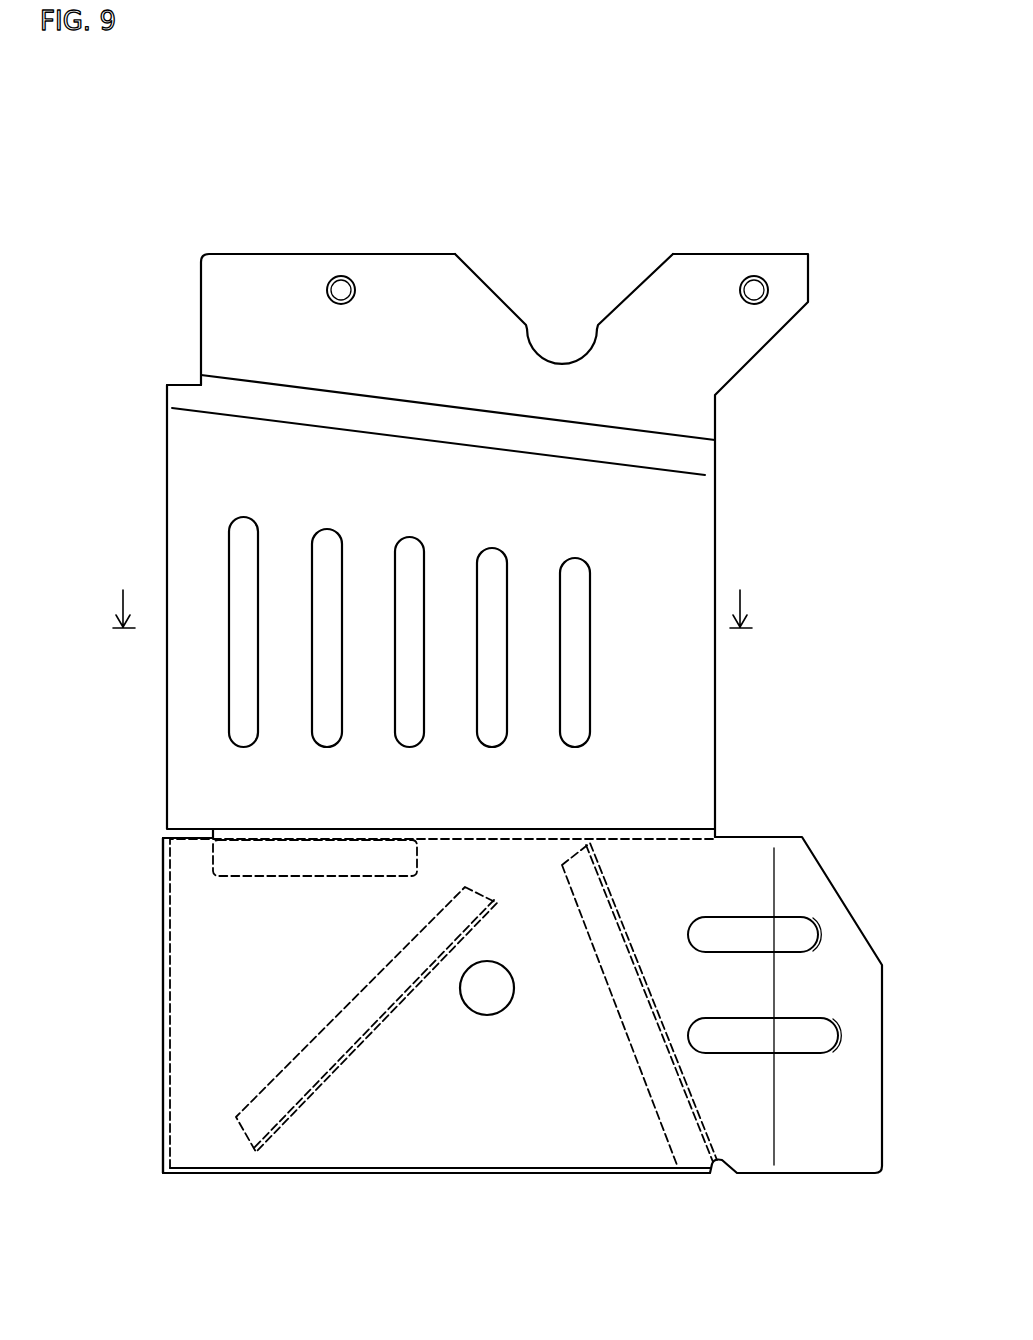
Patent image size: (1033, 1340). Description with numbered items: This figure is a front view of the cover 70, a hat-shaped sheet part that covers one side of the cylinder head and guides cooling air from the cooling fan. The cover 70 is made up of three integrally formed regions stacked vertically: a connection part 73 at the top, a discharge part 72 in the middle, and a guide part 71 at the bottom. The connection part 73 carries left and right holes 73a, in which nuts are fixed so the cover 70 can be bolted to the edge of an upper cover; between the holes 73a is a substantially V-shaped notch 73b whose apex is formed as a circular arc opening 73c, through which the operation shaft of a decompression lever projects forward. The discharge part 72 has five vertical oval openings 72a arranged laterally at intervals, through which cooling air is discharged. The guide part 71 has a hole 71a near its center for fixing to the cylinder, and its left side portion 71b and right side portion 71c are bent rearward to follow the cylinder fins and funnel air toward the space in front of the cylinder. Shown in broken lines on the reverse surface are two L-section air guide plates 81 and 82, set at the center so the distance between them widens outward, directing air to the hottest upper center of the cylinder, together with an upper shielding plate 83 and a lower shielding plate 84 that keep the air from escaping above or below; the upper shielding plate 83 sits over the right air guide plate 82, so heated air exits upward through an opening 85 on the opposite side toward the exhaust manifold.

The cover 70 is at (177, 228).
The guide part 71 is at (736, 836).
The hole 71a is at (486, 1015).
The left side portion 71b is at (866, 939).
The right side portion 71c is at (163, 1009).
The discharge part 72 is at (167, 478).
The openings 72a is at (342, 535).
The connection part 73 is at (201, 321).
The holes 73a is at (341, 276).
The notch 73b is at (470, 268).
The circular arc opening 73c is at (561, 360).
The air guide plate 81 is at (330, 1075).
The air guide plate 82 is at (620, 912).
The upper shielding plate 83 is at (262, 845).
The lower shielding plate 84 is at (575, 1165).
The opening 85 is at (527, 828).